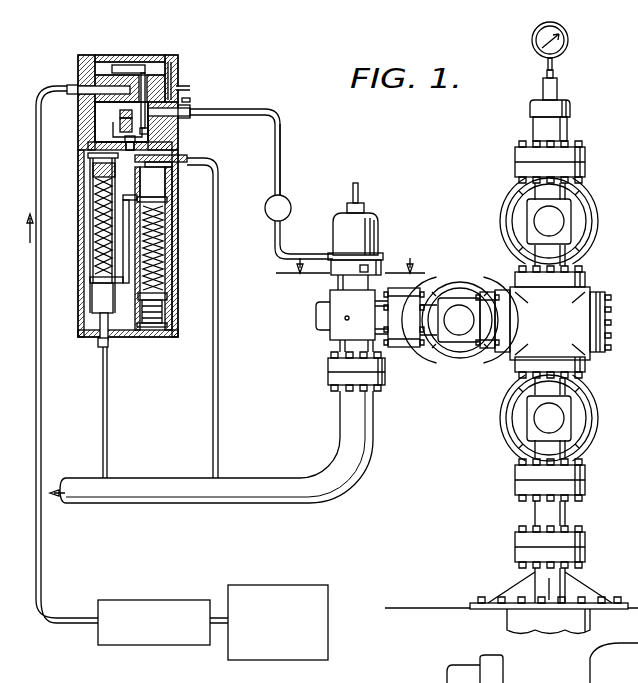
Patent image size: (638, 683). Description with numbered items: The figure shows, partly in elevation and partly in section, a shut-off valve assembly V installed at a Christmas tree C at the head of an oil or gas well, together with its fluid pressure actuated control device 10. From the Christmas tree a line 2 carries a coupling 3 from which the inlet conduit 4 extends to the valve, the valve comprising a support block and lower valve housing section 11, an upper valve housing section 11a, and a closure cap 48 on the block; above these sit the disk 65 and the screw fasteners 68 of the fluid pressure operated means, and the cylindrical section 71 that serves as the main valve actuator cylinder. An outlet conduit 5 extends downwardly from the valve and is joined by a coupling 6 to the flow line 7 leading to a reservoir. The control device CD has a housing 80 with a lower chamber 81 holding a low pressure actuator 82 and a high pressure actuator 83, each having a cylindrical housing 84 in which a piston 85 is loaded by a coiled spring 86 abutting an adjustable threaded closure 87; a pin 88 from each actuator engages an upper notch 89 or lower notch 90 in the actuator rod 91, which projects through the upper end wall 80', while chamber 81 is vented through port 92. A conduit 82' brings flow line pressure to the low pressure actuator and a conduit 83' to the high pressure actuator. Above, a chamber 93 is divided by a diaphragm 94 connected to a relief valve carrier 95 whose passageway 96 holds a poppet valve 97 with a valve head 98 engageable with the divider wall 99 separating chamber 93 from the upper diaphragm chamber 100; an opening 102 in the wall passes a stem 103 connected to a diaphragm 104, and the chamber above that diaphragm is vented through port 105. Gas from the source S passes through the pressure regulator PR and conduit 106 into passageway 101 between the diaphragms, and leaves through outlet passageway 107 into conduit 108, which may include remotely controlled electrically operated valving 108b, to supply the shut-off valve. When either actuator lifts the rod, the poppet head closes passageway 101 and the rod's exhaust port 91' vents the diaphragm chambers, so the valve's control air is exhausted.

The fluid pressure actuated control device 10 is at (228, 42).
The diaphragm 104 is at (106, 55).
The vent port 105 is at (127, 55).
The stem 103 is at (153, 65).
The upper diaphragm chamber 100 is at (152, 62).
The divider wall 99 is at (173, 80).
The opening 102 is at (180, 90).
The passageway 101 is at (72, 84).
The control device CD is at (182, 100).
The outlet passageway 107 is at (190, 112).
The lower diaphragm chamber 93 is at (174, 123).
The poppet valve 97 is at (148, 132).
The upper end wall 80' is at (183, 150).
The valve head 98 is at (120, 108).
The passageway 96 is at (120, 120).
The diaphragm 94 is at (113, 130).
The relief valve carrier 95 is at (125, 150).
The lower chamber 81 is at (88, 326).
The high pressure actuator 83 is at (82, 233).
The upper notch 89 is at (96, 205).
The adjustable threaded closure 87 is at (98, 172).
The pin 88 is at (118, 280).
The piston 85 is at (100, 298).
The coiled spring 86 is at (128, 196).
The actuator rod 91 is at (88, 241).
The cylindrical housing 84 is at (160, 228).
The low pressure actuator 82 is at (170, 248).
The housing 80 is at (172, 333).
The exhaust port 91' is at (172, 170).
The lower notch 90 is at (120, 338).
The vent port 92 is at (118, 359).
The conduit 83' is at (126, 412).
The conduit 82' is at (227, 318).
The conduit 106 is at (41, 553).
The pressure regulator PR is at (143, 600).
The source of fluid under pressure S is at (283, 585).
The conduit 108 is at (282, 145).
The remotely controlled electrically operated valving 108b is at (292, 203).
The shut-off valve assembly V is at (382, 205).
The screw fasteners 68 is at (375, 250).
The disk 65 is at (382, 258).
The upper valve housing section 11a is at (347, 287).
The support block and lower valve housing section 11 is at (340, 307).
The closure cap 48 is at (318, 325).
The outlet conduit 5 is at (343, 345).
The coupling 6 is at (328, 378).
The flow line 7 is at (358, 437).
The inlet conduit 4 is at (384, 343).
The coupling 3 is at (415, 345).
The line 2 is at (432, 365).
The Christmas tree C is at (585, 288).
The cylindrical section 71 is at (637, 650).